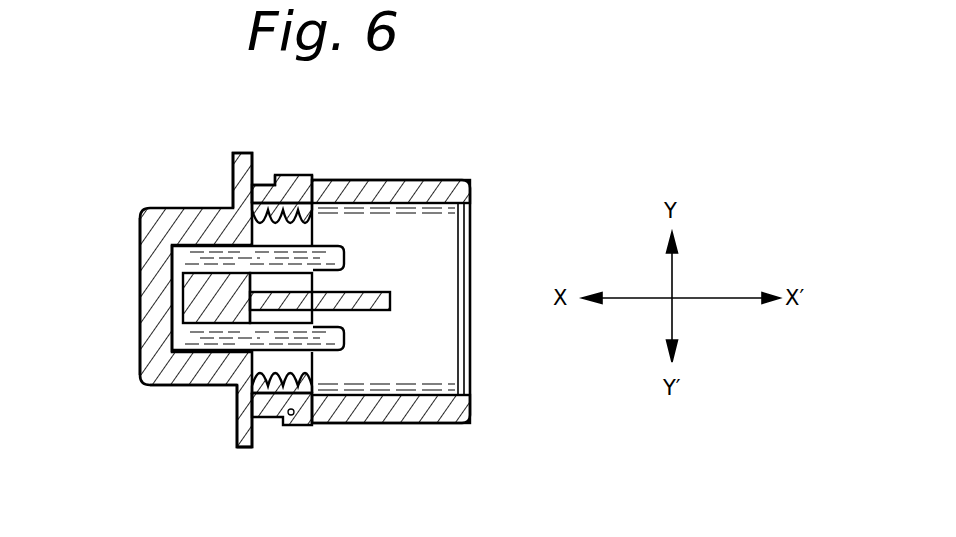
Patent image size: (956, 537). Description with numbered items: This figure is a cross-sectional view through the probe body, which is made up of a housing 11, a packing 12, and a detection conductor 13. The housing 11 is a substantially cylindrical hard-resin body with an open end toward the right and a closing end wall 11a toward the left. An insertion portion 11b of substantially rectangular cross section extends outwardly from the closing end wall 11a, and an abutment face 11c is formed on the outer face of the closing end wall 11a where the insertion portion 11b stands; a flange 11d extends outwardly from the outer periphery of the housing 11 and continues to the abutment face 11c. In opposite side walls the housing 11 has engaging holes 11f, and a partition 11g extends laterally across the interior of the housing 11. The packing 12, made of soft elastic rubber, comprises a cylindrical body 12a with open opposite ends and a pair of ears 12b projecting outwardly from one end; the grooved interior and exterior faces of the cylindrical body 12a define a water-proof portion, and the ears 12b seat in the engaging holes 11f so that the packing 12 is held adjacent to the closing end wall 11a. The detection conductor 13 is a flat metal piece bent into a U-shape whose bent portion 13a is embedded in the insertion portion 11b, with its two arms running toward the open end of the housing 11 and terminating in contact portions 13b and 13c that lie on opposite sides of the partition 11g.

The housing 11 is at (408, 428).
The closing end wall 11a is at (232, 392).
The insertion portion 11b is at (156, 387).
The abutment face 11c is at (223, 212).
The flange 11d is at (241, 451).
The engaging holes 11f is at (298, 178).
The partition 11g is at (360, 295).
The packing 12 is at (310, 429).
The cylindrical body 12a is at (270, 173).
The ears 12b is at (313, 180).
The detection conductor 13 is at (188, 236).
The bent portion 13a is at (152, 326).
The contact portion 13b is at (343, 251).
The contact portion 13c is at (346, 338).